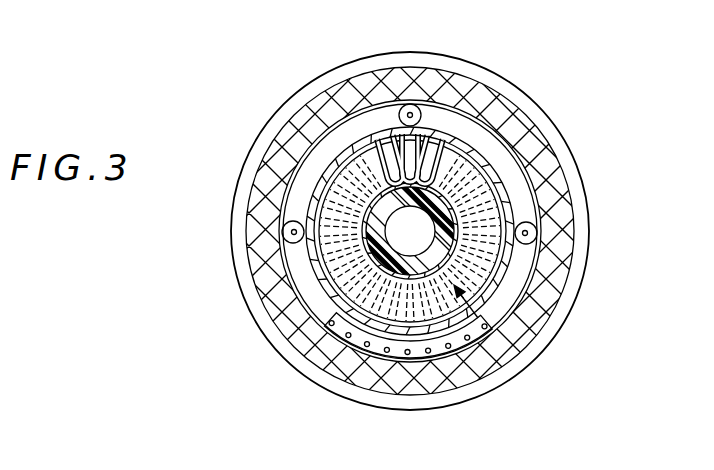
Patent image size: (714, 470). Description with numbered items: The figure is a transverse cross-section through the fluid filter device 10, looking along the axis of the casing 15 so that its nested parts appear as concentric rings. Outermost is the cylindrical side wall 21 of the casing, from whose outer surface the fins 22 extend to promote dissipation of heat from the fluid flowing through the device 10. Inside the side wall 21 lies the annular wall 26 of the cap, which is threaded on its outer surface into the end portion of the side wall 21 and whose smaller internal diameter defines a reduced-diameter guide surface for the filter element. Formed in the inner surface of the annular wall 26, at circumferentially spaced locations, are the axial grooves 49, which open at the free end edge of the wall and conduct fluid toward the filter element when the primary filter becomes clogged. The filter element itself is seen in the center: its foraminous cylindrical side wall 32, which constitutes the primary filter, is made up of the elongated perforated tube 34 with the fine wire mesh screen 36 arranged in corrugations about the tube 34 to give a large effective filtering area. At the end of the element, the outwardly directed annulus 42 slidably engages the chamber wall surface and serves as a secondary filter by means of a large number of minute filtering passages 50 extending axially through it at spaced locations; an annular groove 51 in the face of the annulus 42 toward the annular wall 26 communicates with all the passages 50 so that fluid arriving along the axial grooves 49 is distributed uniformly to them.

The fluid filter device 10 is at (622, 193).
The casing 15 is at (604, 234).
The side wall 21 is at (533, 136).
The fins 22 is at (537, 104).
The annular wall portion 26 is at (535, 323).
The foraminous cylindrical side wall 32 is at (482, 378).
The elongated tube 34 is at (313, 197).
The wire mesh screen 36 is at (380, 158).
The annulus 42 is at (320, 333).
The axial grooves 49 is at (413, 114).
The filtering passages 50 is at (404, 110).
The annular groove 51 is at (376, 353).